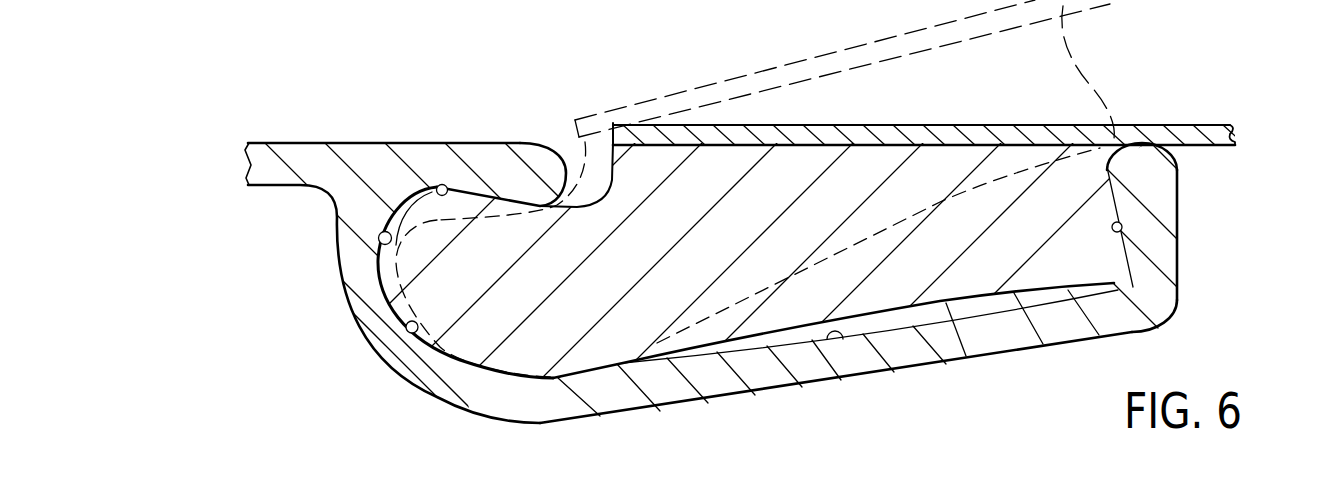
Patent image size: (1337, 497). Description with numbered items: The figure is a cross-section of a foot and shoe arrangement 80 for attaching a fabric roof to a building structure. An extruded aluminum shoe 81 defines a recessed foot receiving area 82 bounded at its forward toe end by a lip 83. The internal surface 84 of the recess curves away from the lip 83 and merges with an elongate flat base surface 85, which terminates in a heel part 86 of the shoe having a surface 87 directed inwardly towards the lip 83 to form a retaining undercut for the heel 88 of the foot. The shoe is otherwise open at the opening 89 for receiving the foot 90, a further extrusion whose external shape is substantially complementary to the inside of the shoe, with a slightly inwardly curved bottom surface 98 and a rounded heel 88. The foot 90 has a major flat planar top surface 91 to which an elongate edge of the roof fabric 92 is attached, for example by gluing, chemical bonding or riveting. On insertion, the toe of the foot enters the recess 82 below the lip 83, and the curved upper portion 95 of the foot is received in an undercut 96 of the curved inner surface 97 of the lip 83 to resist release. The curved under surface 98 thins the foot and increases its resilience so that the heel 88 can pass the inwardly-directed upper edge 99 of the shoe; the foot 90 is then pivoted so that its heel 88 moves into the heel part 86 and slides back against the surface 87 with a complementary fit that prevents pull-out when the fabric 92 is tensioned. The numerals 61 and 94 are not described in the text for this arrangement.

The hinge member (partially shown) 61 is at (654, 2).
The foot and shoe arrangement 80 is at (287, 141).
The shoe 81 is at (665, 387).
The recessed foot receiving area 82 is at (440, 343).
The lip 83 is at (505, 167).
The internal surface 84 is at (414, 333).
The elongate flat base surface 85 is at (843, 335).
The heel part 86 is at (1165, 192).
The surface 87 is at (1122, 226).
The heel 88 is at (1122, 268).
The opening 89 is at (563, 151).
The foot 90 is at (686, 272).
The top surface 91 is at (927, 140).
The roof fabric 92 is at (1232, 124).
The inner wall surface 94 is at (393, 197).
The curved upper portion 95 is at (452, 194).
The undercut 96 is at (438, 184).
The curved inner surface 97 is at (379, 251).
The curved under surface 98 is at (973, 337).
The inwardly-directed upper edge 99 is at (1100, 164).